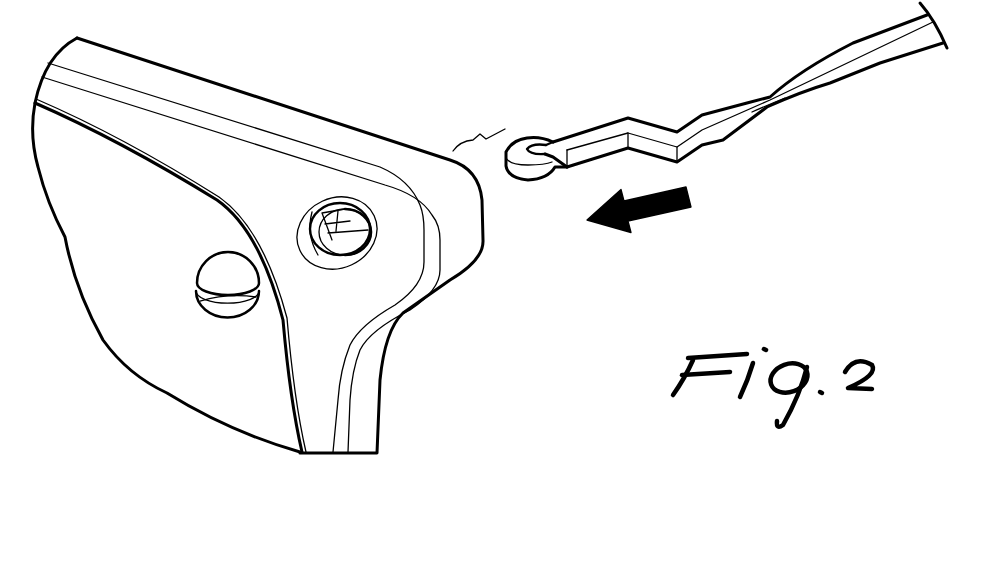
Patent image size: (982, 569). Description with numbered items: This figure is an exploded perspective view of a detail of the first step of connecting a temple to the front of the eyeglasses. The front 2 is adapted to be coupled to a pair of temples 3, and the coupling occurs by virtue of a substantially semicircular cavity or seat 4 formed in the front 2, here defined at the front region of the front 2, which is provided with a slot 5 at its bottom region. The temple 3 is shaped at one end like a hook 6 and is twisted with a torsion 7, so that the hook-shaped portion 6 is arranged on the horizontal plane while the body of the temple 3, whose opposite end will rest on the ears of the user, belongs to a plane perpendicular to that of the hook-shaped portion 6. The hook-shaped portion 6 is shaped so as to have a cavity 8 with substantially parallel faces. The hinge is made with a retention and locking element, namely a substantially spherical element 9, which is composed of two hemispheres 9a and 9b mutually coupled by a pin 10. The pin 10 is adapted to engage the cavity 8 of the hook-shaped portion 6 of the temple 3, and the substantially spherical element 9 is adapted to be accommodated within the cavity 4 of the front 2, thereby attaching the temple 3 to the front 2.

The front 2 is at (217, 113).
The temple 3 is at (726, 144).
The cavity 4 is at (347, 253).
The slot 5 is at (343, 220).
The hook 6 is at (536, 169).
The torsion 7 is at (777, 98).
The cavity 8 is at (535, 150).
The substantially spherical element 9 is at (205, 325).
The hemisphere 9a is at (208, 265).
The hemisphere 9b is at (245, 316).
The pin 10 is at (240, 298).